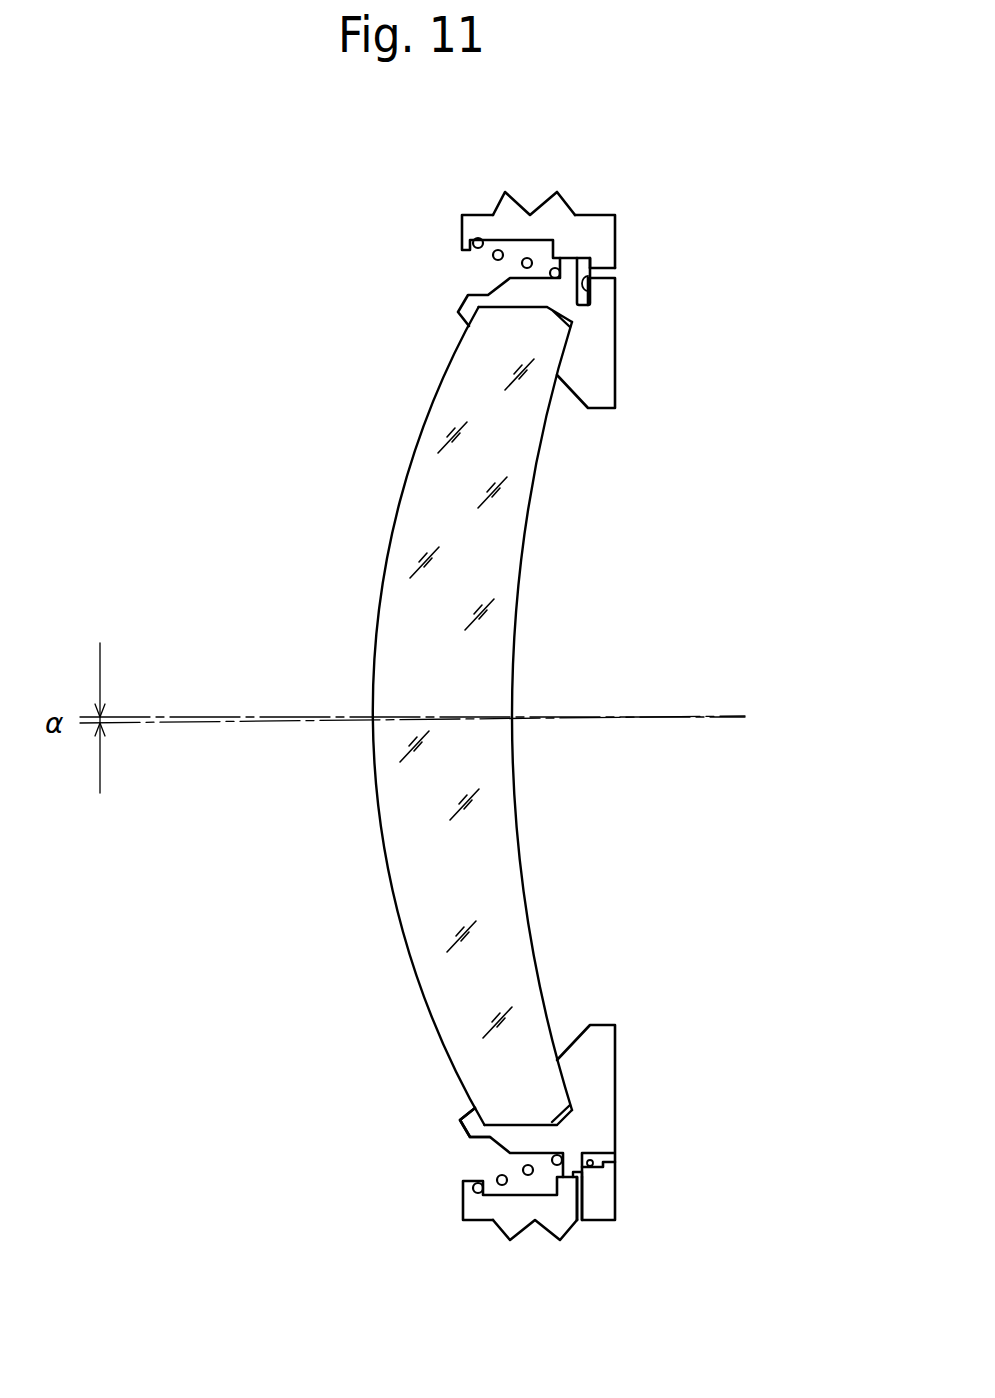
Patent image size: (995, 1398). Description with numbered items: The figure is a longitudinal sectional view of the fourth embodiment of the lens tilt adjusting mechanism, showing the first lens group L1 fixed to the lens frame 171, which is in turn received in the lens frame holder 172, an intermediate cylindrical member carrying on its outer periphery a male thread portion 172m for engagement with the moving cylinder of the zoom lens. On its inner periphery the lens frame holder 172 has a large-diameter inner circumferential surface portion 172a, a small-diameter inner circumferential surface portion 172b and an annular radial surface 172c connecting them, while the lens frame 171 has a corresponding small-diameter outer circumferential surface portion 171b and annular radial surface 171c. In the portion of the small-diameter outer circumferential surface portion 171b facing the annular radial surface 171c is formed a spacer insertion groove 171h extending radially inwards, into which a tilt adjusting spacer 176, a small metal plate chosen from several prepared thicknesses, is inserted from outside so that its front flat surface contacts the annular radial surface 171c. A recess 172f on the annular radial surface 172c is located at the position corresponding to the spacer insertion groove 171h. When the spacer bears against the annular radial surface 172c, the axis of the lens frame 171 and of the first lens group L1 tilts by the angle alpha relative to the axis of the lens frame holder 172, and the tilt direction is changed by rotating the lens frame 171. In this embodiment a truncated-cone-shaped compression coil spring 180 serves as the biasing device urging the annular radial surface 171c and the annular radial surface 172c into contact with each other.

The first lens group L1 is at (392, 638).
The lens frame 171 is at (610, 360).
The small-diameter outer circumferential surface portion 171b is at (594, 1166).
The annular radial surface 171c is at (587, 1176).
The spacer insertion groove 171h is at (592, 277).
The lens frame holder 172 is at (612, 219).
The large-diameter inner circumferential surface portion 172a is at (570, 1177).
The small-diameter inner circumferential surface portion 172b is at (584, 1172).
The annular radial surface 172c is at (573, 1182).
The recess 172f is at (597, 268).
The male thread portion 172m is at (534, 207).
The tilt adjusting spacer 176 is at (590, 303).
The compression coil spring 180 is at (493, 256).